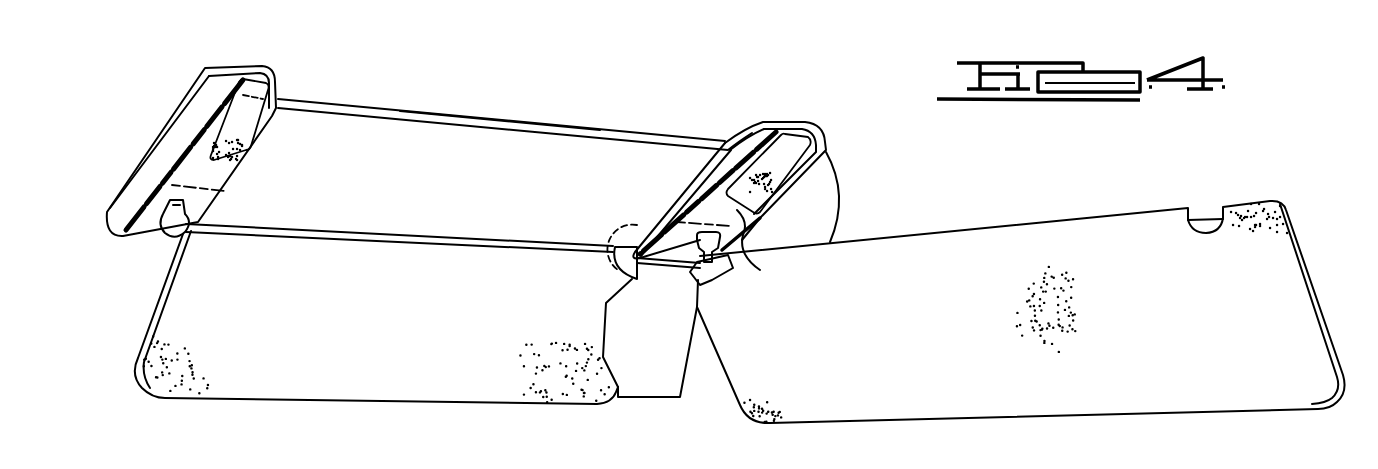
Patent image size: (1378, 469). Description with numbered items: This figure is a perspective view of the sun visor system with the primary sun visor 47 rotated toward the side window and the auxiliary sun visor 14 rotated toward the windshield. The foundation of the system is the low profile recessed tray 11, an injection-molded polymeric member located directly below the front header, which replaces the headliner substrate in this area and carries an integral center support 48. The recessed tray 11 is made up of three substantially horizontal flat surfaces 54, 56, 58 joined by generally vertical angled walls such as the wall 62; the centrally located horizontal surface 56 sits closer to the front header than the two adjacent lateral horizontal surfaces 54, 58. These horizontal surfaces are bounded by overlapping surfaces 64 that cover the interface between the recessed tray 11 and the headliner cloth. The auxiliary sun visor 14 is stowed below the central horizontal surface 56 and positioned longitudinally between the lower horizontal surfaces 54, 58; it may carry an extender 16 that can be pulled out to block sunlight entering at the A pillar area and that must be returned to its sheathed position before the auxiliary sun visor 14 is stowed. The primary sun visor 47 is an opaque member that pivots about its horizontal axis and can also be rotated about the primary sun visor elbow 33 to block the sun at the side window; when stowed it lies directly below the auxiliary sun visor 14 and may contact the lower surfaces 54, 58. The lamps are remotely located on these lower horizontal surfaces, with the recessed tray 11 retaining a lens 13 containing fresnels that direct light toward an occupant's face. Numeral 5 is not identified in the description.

The detail area shown in FIG. 5 is at (600, 271).
The low profile recessed tray 11 is at (405, 100).
The lens 13 is at (240, 136).
The auxiliary sun visor 14 is at (220, 383).
The extender 16 is at (643, 382).
The primary sun visor elbow 33 is at (700, 272).
The primary sun visor 47 is at (1257, 377).
The integral center support 48 is at (163, 233).
The horizontal flat surface 54 is at (766, 248).
The centrally located horizontal surface 56 is at (503, 147).
The horizontal flat surface 58 is at (203, 180).
The vertical angled wall 62 is at (730, 175).
The overlapping surfaces 64 is at (180, 136).